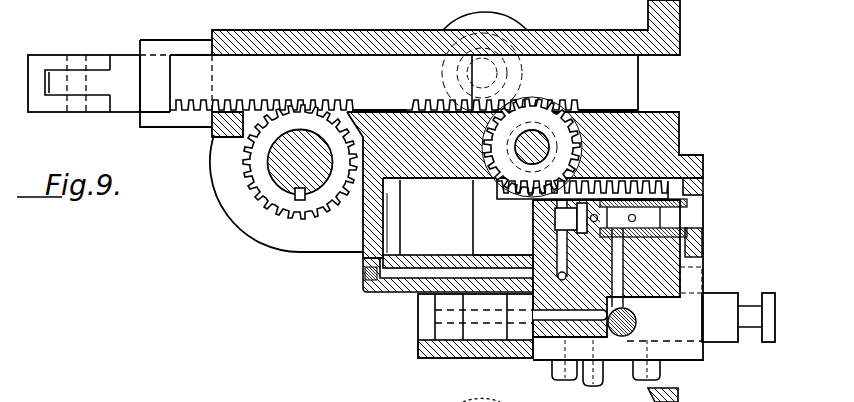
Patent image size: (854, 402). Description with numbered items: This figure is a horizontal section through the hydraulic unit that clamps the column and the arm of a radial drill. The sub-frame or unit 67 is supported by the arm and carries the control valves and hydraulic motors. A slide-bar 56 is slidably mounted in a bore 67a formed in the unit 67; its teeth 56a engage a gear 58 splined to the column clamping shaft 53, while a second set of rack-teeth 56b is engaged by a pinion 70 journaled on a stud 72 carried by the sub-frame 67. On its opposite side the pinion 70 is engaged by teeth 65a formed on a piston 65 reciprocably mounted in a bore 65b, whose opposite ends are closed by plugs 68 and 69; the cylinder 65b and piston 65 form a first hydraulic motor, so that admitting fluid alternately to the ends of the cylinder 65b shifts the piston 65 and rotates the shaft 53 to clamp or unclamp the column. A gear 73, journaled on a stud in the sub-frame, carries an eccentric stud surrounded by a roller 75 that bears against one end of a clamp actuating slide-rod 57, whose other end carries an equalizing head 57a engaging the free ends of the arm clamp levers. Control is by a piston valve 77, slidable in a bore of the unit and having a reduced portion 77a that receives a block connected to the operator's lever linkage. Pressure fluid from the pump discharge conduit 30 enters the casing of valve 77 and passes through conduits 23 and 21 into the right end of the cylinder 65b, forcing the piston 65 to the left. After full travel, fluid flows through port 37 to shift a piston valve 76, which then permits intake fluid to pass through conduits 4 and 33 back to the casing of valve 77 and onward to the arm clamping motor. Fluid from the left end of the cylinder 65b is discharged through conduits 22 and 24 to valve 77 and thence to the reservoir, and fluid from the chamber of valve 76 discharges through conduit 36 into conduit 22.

The equalizing head 57a is at (42, 55).
The clamp actuating slide-rod 57 is at (125, 107).
The slide-bar 56 is at (404, 83).
The teeth of slide-bar 56a is at (252, 100).
The second set of rack-teeth 56b is at (556, 108).
The column clamping shaft 53 is at (280, 164).
The gear 58 is at (250, 197).
The plug 68 is at (363, 231).
The gear 73 is at (450, 73).
The roller 75 is at (493, 45).
The stud 72 is at (532, 130).
The pinion 70 is at (572, 113).
The bore 67a is at (665, 57).
The sub-frame or unit 67 is at (672, 133).
The plug 69 is at (703, 186).
The bore (cylinder) 65b is at (437, 180).
The teeth of piston 65a is at (510, 199).
The piston 65 is at (458, 250).
The conduit 22 is at (417, 277).
The conduit 24 is at (530, 297).
The conduit 36 is at (536, 246).
The port 37 is at (531, 211).
The piston valve 76 is at (639, 218).
The conduit 33 is at (570, 322).
The conduit 4 is at (700, 242).
The conduit 21 is at (703, 285).
The conduit 23 is at (650, 300).
The piston valve 77 is at (732, 317).
The reduced portion of piston valve 77a is at (753, 298).
The pump discharge conduit 30 is at (604, 372).